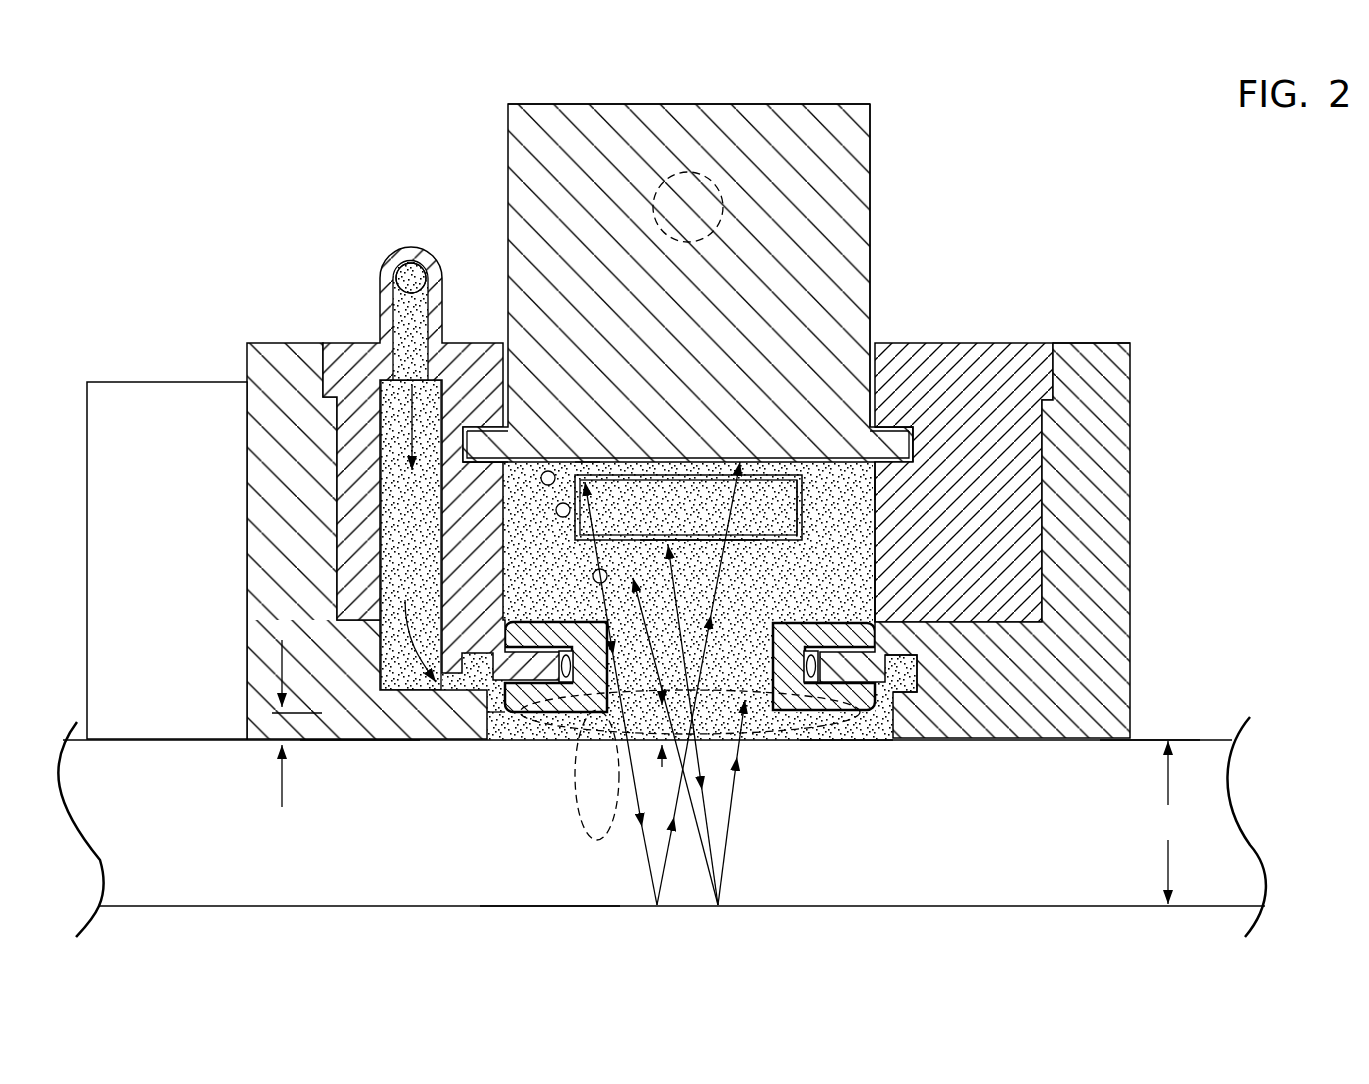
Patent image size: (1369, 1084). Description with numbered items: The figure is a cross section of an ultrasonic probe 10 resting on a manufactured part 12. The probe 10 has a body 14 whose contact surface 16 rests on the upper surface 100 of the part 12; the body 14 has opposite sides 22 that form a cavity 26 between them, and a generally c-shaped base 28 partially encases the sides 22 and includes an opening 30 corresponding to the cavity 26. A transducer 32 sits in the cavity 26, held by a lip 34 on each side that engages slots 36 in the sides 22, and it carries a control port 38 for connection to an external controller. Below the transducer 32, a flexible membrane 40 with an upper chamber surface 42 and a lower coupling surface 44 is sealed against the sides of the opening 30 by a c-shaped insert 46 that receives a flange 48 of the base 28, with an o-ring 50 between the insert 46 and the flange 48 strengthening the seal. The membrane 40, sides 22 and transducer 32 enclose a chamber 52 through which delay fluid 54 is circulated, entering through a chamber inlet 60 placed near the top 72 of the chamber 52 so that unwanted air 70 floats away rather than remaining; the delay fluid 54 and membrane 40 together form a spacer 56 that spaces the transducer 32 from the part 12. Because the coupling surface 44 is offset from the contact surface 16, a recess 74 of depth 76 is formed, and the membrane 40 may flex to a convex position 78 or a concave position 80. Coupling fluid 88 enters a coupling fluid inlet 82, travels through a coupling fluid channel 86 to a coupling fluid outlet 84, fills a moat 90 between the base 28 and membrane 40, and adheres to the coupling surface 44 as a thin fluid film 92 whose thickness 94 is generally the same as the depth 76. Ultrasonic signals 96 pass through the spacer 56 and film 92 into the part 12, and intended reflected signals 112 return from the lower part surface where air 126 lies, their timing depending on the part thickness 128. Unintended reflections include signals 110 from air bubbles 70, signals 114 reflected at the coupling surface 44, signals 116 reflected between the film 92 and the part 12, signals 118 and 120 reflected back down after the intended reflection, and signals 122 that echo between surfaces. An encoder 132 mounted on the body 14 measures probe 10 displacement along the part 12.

The probe 10 is at (1052, 106).
The part 12 is at (1218, 735).
The body 14 is at (1102, 303).
The contact surface 16 is at (357, 745).
The sides 22 is at (975, 341).
The cavity 26 is at (870, 368).
The base 28 is at (1132, 399).
The opening 30 is at (872, 576).
The transducer 32 is at (541, 104).
The lip 34 is at (893, 421).
The slots 36 is at (484, 452).
The control port 38 is at (717, 180).
The flexible membrane 40 is at (780, 617).
The chamber surface 42 is at (722, 690).
The coupling surface 44 is at (748, 745).
The insert 46 is at (820, 607).
The flange 48 is at (520, 620).
The o-ring 50 is at (592, 579).
The chamber 52 is at (877, 485).
The delay fluid 54 is at (848, 523).
The spacer 56 is at (787, 490).
The chamber inlet 60 is at (708, 541).
The unwanted air 70 is at (556, 508).
The top of the chamber 72 is at (877, 497).
The recess 74 is at (540, 742).
The depth 76 is at (282, 800).
The convex position 78 is at (588, 789).
The concave position 80 is at (690, 763).
The coupling fluid inlet 82 is at (380, 310).
The coupling fluid outlet 84 is at (915, 700).
The coupling fluid channel 86 is at (372, 548).
The coupling fluid 88 is at (426, 530).
The moat 90 is at (838, 733).
The fluid film 92 is at (505, 742).
The thickness 94 is at (662, 744).
The ultrasonic signals 96 is at (587, 467).
The upper surface 100 is at (1160, 732).
The signals reflected from air bubbles 110 is at (613, 478).
The intended reflected signals 112 is at (712, 520).
The signals reflected at the coupling surface 114 is at (612, 585).
The signals reflected between film and part 116 is at (648, 690).
The signals reflected back down between film and part 118 is at (693, 823).
The signals reflected back down at the coupling surface 120 is at (718, 902).
The echoing signals 122 is at (740, 750).
The air 126 is at (565, 950).
The thickness 128 is at (1171, 822).
The encoder 132 is at (185, 381).